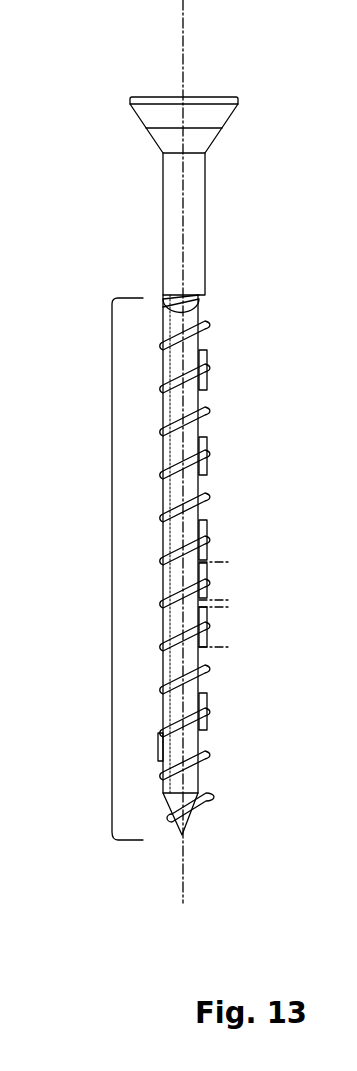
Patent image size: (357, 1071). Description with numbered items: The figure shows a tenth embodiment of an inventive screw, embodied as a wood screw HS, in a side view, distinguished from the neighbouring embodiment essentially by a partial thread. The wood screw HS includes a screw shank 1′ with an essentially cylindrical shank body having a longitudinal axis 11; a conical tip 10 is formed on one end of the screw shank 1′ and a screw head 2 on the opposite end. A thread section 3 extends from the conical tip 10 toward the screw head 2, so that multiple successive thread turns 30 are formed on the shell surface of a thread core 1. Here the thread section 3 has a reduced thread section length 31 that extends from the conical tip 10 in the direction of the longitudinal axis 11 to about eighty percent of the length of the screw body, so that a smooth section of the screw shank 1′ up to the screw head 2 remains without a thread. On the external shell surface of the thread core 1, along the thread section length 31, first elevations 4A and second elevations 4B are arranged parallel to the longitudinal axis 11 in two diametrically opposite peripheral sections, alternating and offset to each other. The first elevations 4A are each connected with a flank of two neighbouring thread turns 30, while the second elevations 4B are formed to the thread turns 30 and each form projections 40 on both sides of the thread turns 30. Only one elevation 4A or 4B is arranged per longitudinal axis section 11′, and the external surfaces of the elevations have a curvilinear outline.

The longitudinal axis 11 is at (183, 38).
The screw head 2 is at (188, 115).
The screw shank 1′ is at (192, 208).
The thread core 1 is at (182, 315).
The thread section 3 is at (207, 415).
The thread turns 30 is at (202, 673).
The second elevations 4B is at (200, 447).
The projections 40 is at (203, 525).
The longitudinal axis section 11′ is at (230, 562).
The first elevations 4A is at (167, 753).
The conical tip 10 is at (198, 810).
The thread section length 31 is at (112, 555).
The wood screw HS is at (160, 843).